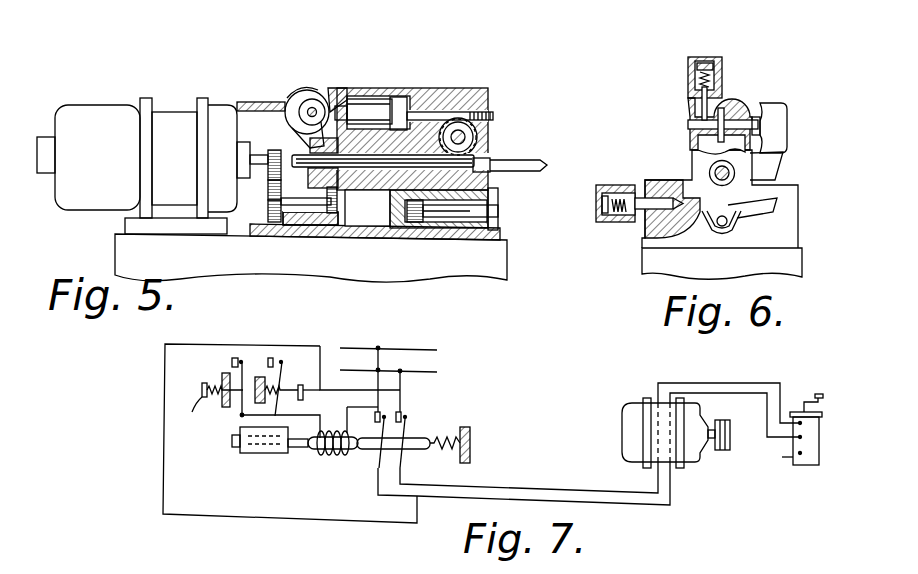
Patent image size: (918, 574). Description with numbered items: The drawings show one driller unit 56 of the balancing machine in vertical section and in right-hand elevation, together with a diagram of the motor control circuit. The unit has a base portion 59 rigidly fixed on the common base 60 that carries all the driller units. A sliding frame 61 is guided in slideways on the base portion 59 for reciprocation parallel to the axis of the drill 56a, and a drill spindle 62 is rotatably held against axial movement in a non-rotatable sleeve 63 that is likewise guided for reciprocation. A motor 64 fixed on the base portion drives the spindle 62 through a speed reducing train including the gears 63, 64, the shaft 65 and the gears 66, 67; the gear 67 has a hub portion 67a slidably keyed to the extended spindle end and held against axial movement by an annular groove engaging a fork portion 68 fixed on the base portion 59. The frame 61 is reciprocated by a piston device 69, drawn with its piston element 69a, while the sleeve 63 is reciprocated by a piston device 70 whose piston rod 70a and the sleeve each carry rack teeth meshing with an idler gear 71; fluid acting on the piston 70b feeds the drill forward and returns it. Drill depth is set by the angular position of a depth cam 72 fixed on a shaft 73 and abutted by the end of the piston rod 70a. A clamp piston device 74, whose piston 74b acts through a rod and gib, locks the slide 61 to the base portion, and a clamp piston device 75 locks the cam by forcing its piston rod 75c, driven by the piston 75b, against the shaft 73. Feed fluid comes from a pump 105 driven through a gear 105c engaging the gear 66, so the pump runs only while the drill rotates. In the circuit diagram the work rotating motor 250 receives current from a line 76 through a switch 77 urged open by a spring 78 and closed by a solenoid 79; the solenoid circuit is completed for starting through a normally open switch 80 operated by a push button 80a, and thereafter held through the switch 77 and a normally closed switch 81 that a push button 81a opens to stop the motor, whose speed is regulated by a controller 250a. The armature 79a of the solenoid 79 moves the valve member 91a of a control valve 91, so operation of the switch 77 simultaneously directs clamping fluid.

In FIG. 5, the driller unit 56 is at (391, 50).
In FIG. 5, the drill 56a is at (536, 167).
In FIG. 6, the drill 56a is at (710, 171).
In FIG. 5, the base portion 59 is at (493, 238).
In FIG. 6, the base portion 59 is at (772, 246).
In FIG. 5, the base 60 is at (488, 264).
In FIG. 6, the base 60 is at (648, 266).
In FIG. 5, the sliding frame 61 is at (497, 210).
In FIG. 6, the sliding frame 61 is at (779, 210).
In FIG. 5, the drill spindle 62 is at (492, 171).
In FIG. 5, the non-rotatable sleeve 63 is at (274, 150).
In FIG. 5, the motor 64 is at (83, 118).
In FIG. 5, the shaft 65 is at (268, 210).
In FIG. 5, the gear 66 is at (338, 200).
In FIG. 5, the gear 67 is at (342, 95).
In FIG. 5, the hub portion 67a is at (262, 104).
In FIG. 5, the fork portion 68 is at (306, 196).
In FIG. 5, the piston device 69 is at (424, 224).
In FIG. 5, the piston 69a is at (412, 215).
In FIG. 5, the piston device 70 is at (384, 98).
In FIG. 5, the piston rod 70a is at (493, 115).
In FIG. 5, the piston 70b is at (403, 108).
In FIG. 5, the idler gear 71 is at (478, 136).
In FIG. 5, the depth cam 72 is at (300, 100).
In FIG. 6, the depth cam 72 is at (724, 106).
In FIG. 5, the shaft 73 is at (314, 107).
In FIG. 6, the shaft 73 is at (690, 124).
In FIG. 6, the clamp piston device 74 is at (600, 219).
In FIG. 6, the piston 74b is at (614, 193).
In FIG. 6, the clamp piston device 75 is at (688, 78).
In FIG. 6, the piston 75b is at (715, 70).
In FIG. 6, the piston rod 75c is at (700, 100).
In FIG. 7, the line 76 is at (405, 379).
In FIG. 7, the switch 77 is at (412, 410).
In FIG. 7, the spring 78 is at (448, 452).
In FIG. 7, the solenoid 79 is at (340, 457).
In FIG. 7, the armature 79a is at (312, 452).
In FIG. 7, the normally open switch 80 is at (276, 357).
In FIG. 7, the push button 80a is at (300, 402).
In FIG. 7, the normally closed switch 81 is at (232, 360).
In FIG. 7, the push button 81a is at (213, 400).
In FIG. 7, the control valve 91 is at (270, 454).
In FIG. 7, the valve member 91a is at (232, 448).
In FIG. 5, the pump 105 is at (292, 240).
In FIG. 5, the gear 105c is at (330, 240).
In FIG. 7, the work rotating motor 250 is at (697, 453).
In FIG. 7, the controller 250a is at (782, 457).